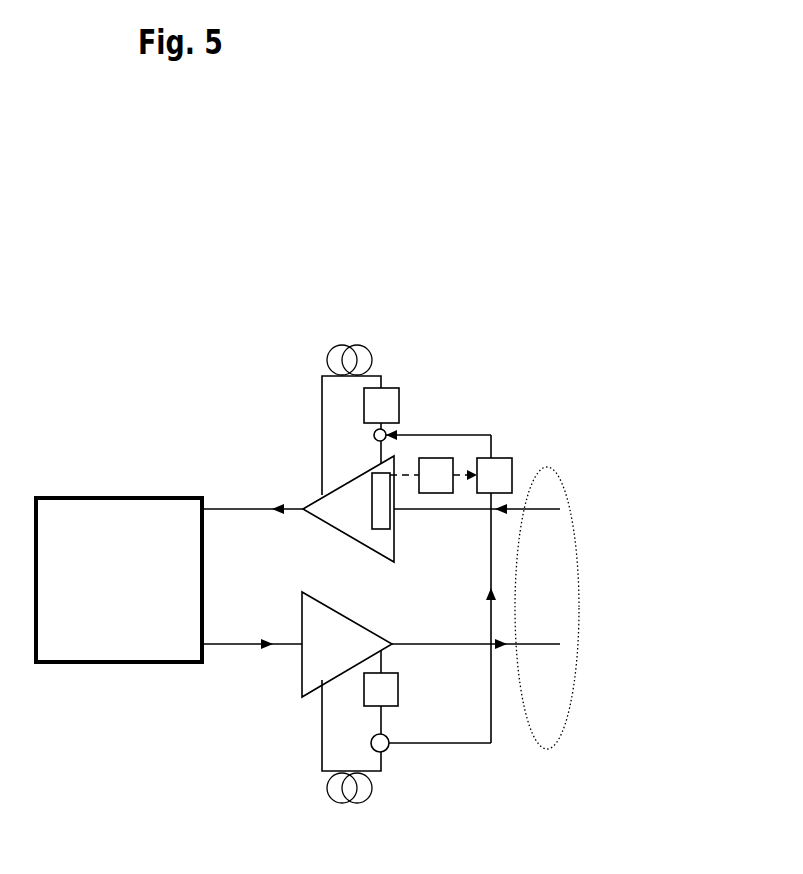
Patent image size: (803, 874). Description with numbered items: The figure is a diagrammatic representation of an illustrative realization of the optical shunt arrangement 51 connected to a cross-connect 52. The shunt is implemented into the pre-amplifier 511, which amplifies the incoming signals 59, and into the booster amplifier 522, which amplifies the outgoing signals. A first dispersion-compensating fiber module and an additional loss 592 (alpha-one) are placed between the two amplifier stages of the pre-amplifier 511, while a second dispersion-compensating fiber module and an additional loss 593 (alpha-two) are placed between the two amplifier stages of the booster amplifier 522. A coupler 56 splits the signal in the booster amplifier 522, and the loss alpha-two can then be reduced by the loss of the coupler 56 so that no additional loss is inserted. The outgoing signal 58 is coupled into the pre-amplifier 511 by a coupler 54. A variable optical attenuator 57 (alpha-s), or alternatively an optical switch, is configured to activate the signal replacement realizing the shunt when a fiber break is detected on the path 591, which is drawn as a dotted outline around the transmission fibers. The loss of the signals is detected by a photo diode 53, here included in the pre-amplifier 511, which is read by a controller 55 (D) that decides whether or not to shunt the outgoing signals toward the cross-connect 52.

The optical amplifier node arrangement 51 is at (473, 282).
The cross-connect XC 52 is at (70, 496).
The photo diode 53 is at (372, 490).
The coupler 54 is at (374, 436).
The controller 55 is at (447, 493).
The coupler 56 is at (389, 746).
The variable optical attenuator 57 is at (497, 458).
The outgoing signal 58 is at (491, 744).
The incoming signals 59 is at (513, 508).
The pre-amplifier 511 is at (337, 535).
The booster amplifier 522 is at (370, 630).
The path 591 is at (558, 470).
The additional loss 592 is at (402, 387).
The additional loss 593 is at (398, 687).